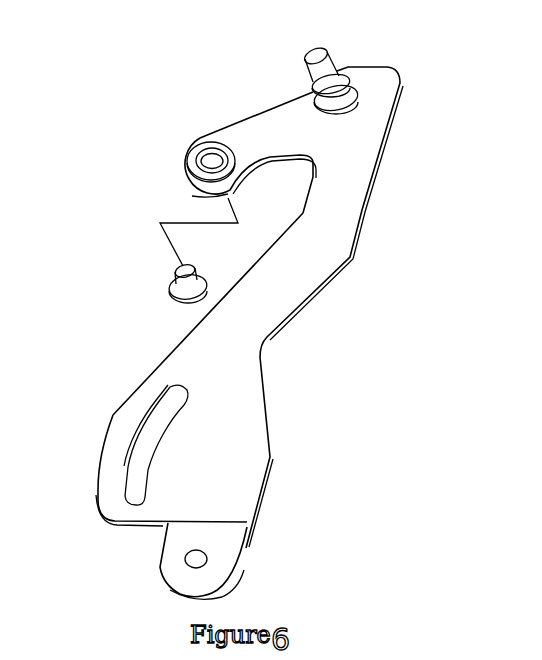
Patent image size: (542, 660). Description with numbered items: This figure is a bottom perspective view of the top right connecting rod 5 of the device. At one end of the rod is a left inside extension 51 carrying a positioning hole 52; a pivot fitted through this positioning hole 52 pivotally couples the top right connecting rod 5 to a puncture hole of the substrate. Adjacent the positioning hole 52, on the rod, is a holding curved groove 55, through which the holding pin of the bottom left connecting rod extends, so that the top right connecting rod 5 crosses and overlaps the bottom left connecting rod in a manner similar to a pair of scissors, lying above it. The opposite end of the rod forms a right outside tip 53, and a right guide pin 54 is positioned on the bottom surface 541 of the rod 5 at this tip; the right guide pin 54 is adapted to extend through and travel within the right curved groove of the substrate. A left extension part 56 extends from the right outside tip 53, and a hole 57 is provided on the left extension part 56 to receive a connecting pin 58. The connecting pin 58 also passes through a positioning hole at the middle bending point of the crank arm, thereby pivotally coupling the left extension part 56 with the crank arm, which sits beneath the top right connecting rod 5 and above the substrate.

The top right connecting rod 5 is at (263, 313).
The left inside extension 51 is at (170, 577).
The positioning hole 52 is at (186, 557).
The right outside tip 53 is at (353, 142).
The right guide pin 54 is at (350, 79).
The bottom surface 541 is at (304, 292).
The holding curved groove 55 is at (140, 447).
The left extension part 56 is at (239, 142).
The hole 57 is at (208, 163).
The connecting pin 58 is at (172, 289).